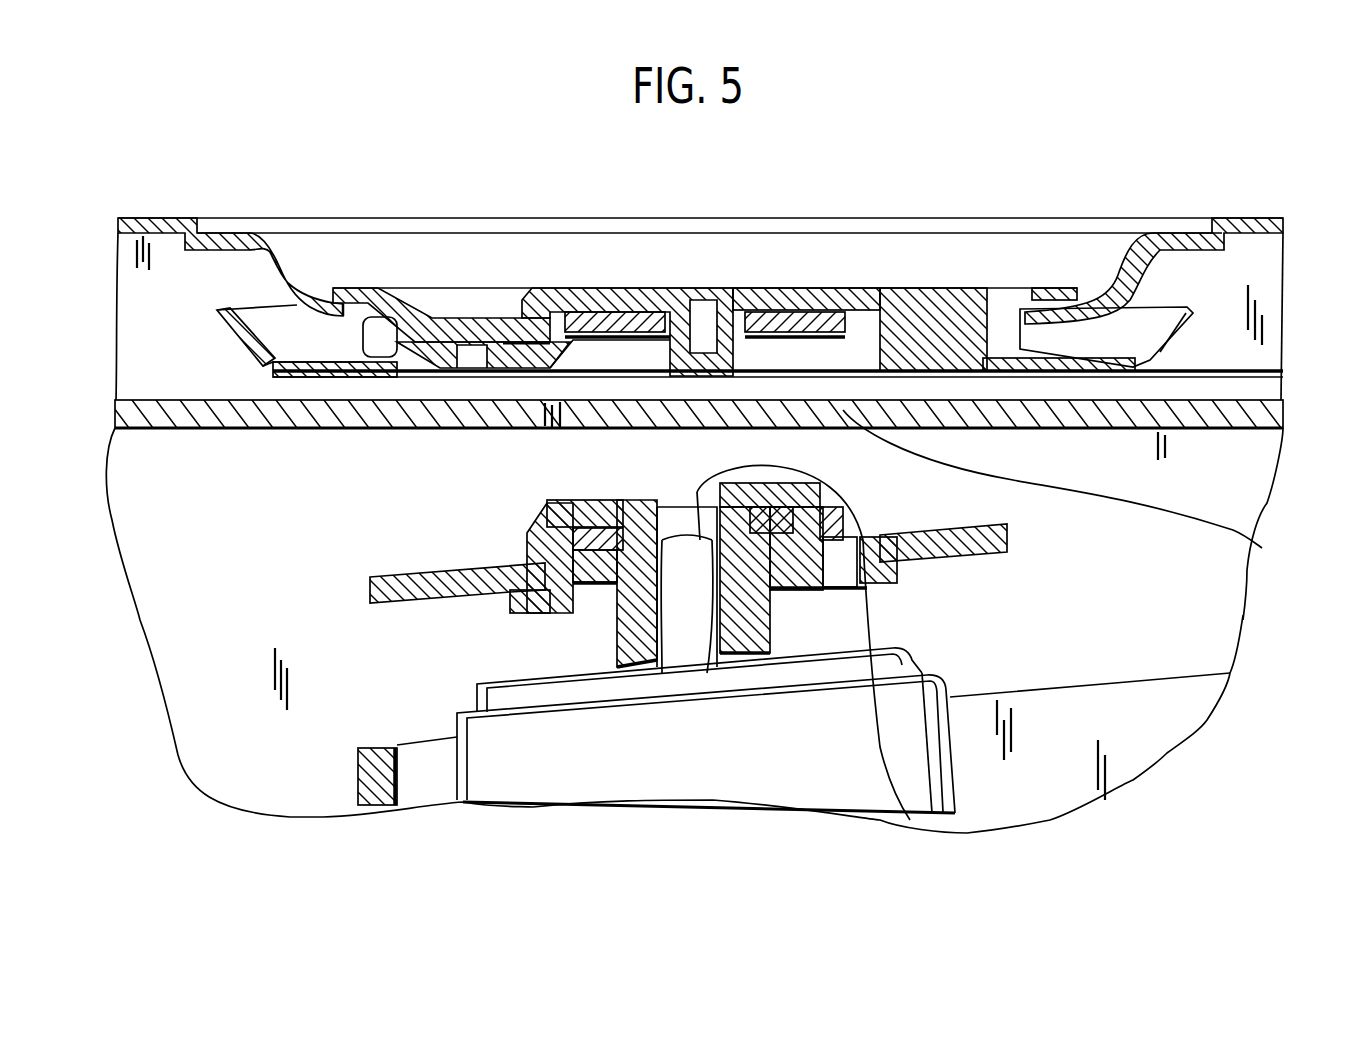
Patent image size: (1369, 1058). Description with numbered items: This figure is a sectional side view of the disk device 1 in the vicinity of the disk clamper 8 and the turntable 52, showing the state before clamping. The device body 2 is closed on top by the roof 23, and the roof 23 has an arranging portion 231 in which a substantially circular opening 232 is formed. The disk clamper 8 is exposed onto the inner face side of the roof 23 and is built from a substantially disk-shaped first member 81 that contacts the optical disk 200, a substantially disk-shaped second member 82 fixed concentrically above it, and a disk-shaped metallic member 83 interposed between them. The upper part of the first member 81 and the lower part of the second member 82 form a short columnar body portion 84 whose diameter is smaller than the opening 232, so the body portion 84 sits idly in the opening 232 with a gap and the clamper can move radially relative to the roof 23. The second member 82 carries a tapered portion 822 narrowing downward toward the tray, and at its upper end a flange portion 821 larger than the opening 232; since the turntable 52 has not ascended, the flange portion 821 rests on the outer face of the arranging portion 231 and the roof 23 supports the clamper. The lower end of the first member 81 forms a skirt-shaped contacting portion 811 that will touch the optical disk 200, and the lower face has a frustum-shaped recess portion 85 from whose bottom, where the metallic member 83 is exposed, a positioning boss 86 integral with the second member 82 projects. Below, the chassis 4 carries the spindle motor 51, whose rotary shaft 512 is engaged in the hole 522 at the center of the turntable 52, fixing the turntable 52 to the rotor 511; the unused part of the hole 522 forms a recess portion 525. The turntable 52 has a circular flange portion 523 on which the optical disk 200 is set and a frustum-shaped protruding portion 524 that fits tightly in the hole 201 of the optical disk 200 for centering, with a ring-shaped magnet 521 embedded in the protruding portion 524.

The disk device 1 is at (403, 196).
The device body 2 is at (157, 255).
The roof 23 is at (1243, 222).
The arranging portion 231 is at (287, 283).
The opening 232 is at (362, 322).
The disk clamper 8 is at (650, 280).
The first member 81 is at (420, 367).
The second member 82 is at (510, 328).
The metallic member 83 is at (600, 315).
The body portion 84 is at (343, 318).
The recess portion 85 is at (596, 358).
The positioning boss 86 is at (680, 355).
The contacting portion 811 is at (1190, 366).
The flange portion 821 is at (1048, 300).
The tapered portion 822 is at (1155, 320).
The optical disk 200 is at (1217, 407).
The hole 201 is at (1262, 547).
The chassis 4 is at (375, 772).
The spindle motor 51 is at (572, 775).
The rotor 511 is at (667, 757).
The rotary shaft 512 is at (707, 625).
The turntable 52 is at (444, 616).
The magnet 521 is at (748, 612).
The hole 522 is at (660, 600).
The flange portion 523 is at (407, 602).
The protruding portion 524 is at (570, 605).
The recess portion 525 is at (900, 817).